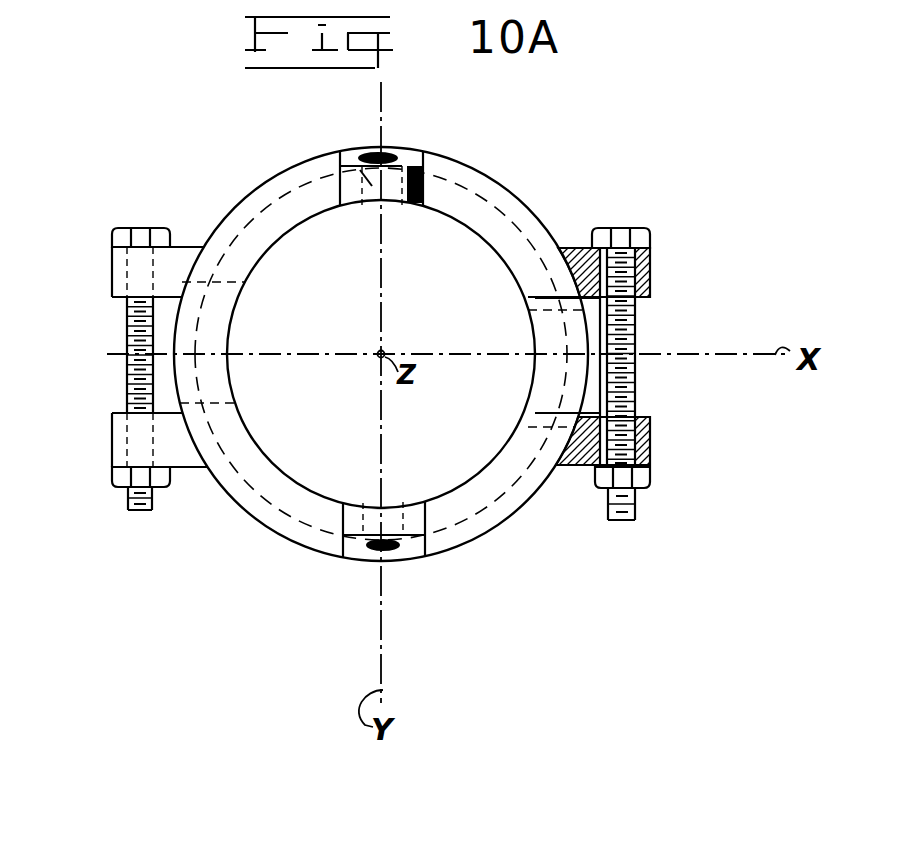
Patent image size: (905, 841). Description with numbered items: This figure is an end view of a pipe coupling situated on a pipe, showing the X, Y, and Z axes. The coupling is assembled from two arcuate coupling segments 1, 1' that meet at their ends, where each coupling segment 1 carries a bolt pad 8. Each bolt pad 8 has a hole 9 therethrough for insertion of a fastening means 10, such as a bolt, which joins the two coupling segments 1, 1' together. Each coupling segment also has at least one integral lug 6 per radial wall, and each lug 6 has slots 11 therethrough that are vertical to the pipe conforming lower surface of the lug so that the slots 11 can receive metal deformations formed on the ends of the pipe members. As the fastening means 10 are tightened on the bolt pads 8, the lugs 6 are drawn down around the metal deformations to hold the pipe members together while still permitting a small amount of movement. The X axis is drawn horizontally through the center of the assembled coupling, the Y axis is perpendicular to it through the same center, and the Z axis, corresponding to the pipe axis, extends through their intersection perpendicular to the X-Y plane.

The coupling segment 1 is at (381, 495).
The coupling segment 1' is at (381, 234).
The lug 6 is at (423, 200).
The bolt pad 8 is at (110, 272).
The hole 9 is at (650, 293).
The fastening means 10 is at (127, 368).
The slot 11 is at (338, 150).